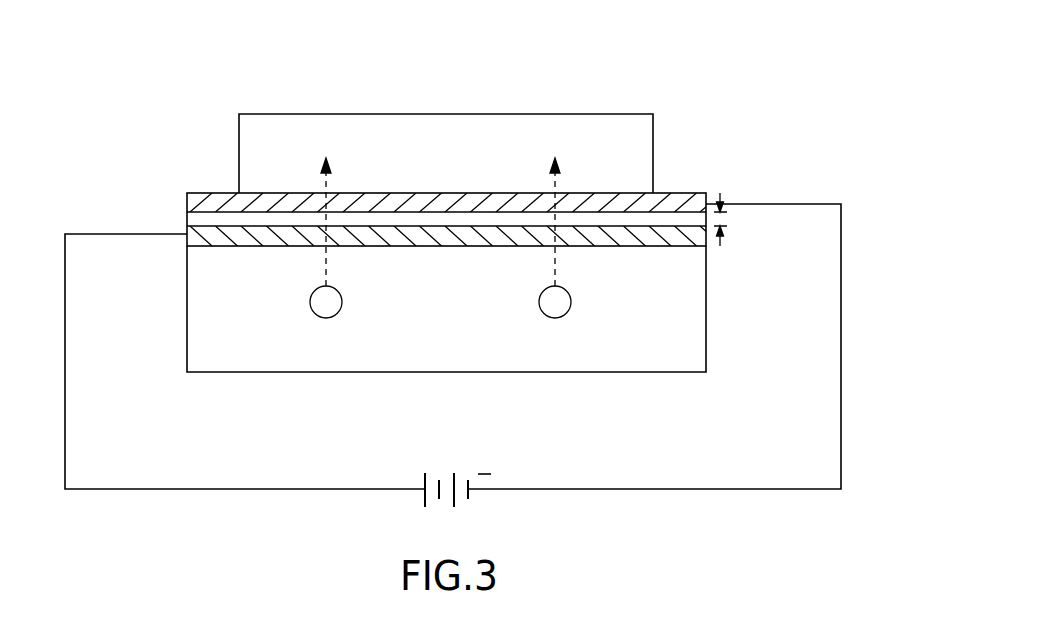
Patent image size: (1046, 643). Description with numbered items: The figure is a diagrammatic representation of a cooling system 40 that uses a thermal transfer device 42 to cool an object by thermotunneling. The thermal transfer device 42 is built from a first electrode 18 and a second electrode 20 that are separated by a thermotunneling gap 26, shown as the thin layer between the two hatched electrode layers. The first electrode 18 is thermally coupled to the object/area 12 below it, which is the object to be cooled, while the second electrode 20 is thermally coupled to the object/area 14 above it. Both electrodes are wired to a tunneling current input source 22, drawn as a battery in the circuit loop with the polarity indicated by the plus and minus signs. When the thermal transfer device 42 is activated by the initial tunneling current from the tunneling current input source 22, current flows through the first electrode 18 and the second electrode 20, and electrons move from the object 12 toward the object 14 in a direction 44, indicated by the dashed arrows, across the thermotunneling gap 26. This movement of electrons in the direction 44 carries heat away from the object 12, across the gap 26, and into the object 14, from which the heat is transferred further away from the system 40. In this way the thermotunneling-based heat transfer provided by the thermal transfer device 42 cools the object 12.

The object/area 12 is at (461, 353).
The object/area 14 is at (448, 114).
The first electrode 18 is at (690, 246).
The second electrode 20 is at (690, 193).
The tunneling current input source 22 is at (403, 446).
The thermotunneling gap 26 is at (727, 219).
The cooling system 40 is at (794, 80).
The thermal transfer device 42 is at (451, 209).
The direction 44 is at (554, 262).